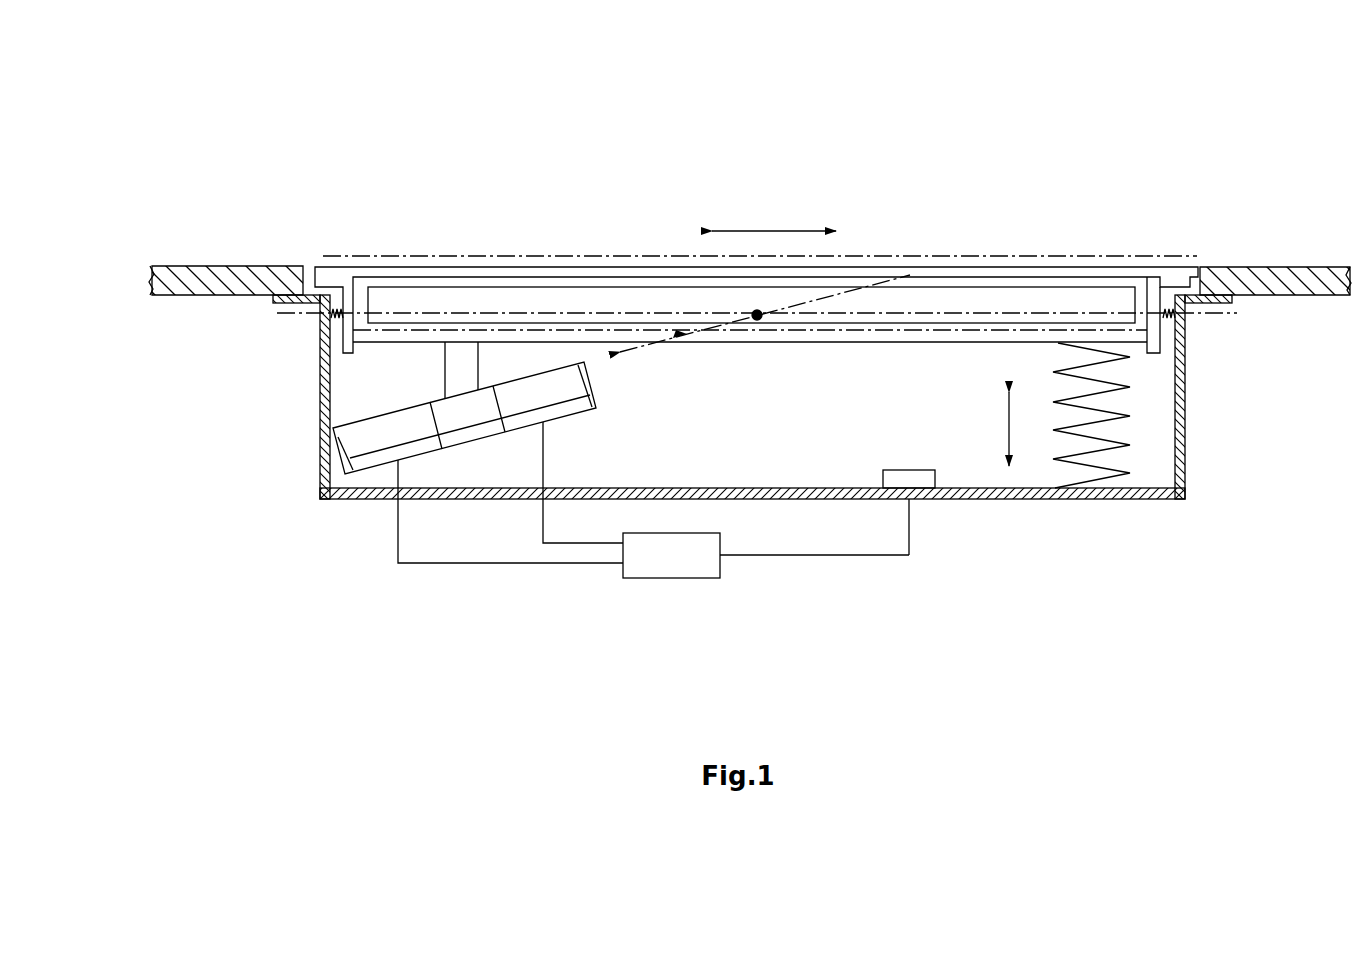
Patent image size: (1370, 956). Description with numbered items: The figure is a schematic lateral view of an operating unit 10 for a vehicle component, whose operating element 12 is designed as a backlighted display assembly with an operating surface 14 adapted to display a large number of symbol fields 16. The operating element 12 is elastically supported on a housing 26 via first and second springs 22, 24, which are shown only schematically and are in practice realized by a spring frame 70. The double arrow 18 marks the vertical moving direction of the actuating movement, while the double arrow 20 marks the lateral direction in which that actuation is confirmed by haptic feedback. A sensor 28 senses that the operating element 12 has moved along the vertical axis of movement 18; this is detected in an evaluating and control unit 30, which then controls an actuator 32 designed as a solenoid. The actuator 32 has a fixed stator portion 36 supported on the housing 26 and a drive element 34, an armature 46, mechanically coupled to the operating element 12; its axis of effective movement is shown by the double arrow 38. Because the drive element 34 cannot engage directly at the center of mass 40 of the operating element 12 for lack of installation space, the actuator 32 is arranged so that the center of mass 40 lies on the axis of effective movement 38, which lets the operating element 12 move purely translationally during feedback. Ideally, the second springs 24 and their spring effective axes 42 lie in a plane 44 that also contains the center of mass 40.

The operating unit 10 is at (1084, 158).
The operating element 12 is at (946, 300).
The operating surface 14 is at (487, 262).
The symbol fields 16 is at (560, 267).
The double arrow (vertical moving direction / vertical axis of movement) 18 is at (1005, 425).
The double arrow (lateral direction) 20 is at (770, 230).
The first spring 22 is at (1117, 443).
The second spring 24 is at (320, 352).
The housing 26 is at (1183, 420).
The sensor 28 is at (903, 475).
The evaluating and control unit 30 is at (698, 560).
The actuator 32 is at (360, 396).
The drive element 34 is at (350, 468).
The fixed stator portion 36 is at (477, 450).
The axis of effective movement 38 is at (670, 327).
The center of mass 40 is at (757, 322).
The spring effective axes 42 is at (315, 313).
The plane 44 is at (1003, 303).
The armature 46 is at (490, 347).
The spring frame 70 is at (1153, 355).